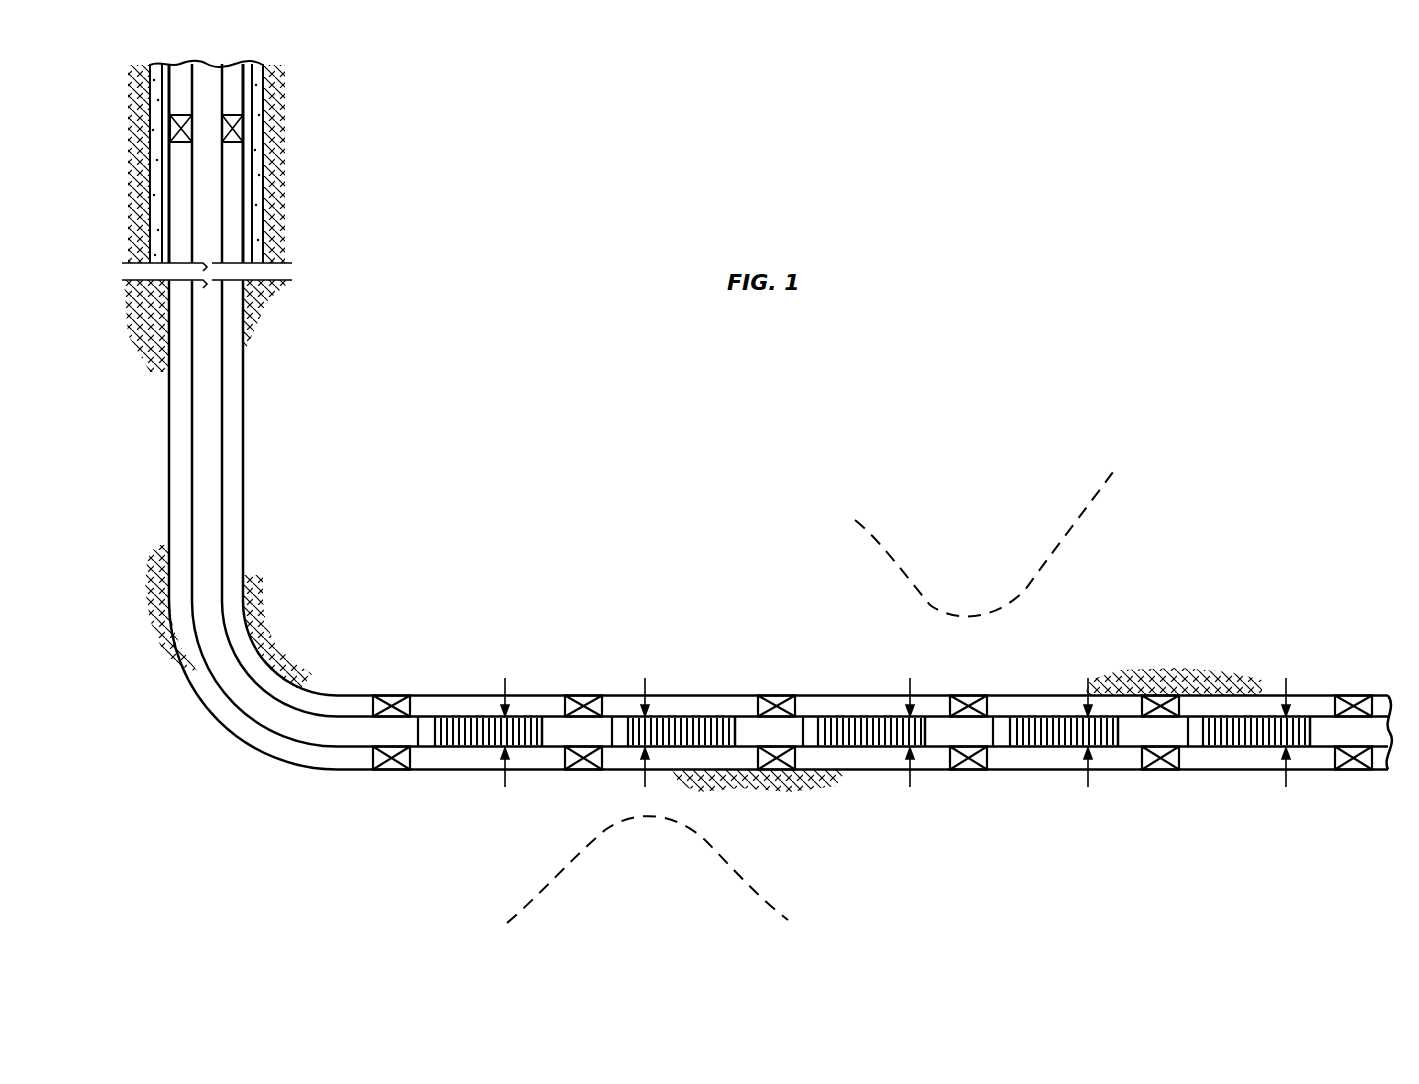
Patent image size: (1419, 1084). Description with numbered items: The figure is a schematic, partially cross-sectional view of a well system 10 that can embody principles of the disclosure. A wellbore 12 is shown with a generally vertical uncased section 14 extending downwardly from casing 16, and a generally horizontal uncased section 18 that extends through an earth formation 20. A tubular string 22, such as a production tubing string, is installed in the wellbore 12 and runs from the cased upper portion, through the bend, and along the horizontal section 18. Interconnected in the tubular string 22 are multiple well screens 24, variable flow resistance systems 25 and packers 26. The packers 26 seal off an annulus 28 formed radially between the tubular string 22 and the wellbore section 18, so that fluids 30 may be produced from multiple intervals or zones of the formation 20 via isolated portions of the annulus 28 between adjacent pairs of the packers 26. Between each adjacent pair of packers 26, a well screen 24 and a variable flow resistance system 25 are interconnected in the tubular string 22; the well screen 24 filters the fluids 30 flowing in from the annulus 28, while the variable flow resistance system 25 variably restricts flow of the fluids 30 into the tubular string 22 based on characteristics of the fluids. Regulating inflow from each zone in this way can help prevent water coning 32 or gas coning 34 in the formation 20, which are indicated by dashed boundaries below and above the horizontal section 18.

The well system 10 is at (470, 320).
The wellbore 12 is at (245, 424).
The generally vertical uncased section 14 is at (240, 376).
The casing 16 is at (252, 205).
The generally horizontal uncased section 18 is at (706, 702).
The earth formation 20 is at (751, 608).
The tubular string 22 is at (233, 452).
The well screen 24 is at (490, 716).
The variable flow resistance system 25 is at (430, 716).
The packer 26 is at (395, 772).
The annulus 28 is at (862, 762).
The fluids 30 is at (506, 680).
The water coning 32 is at (555, 878).
The gas coning 34 is at (1063, 538).